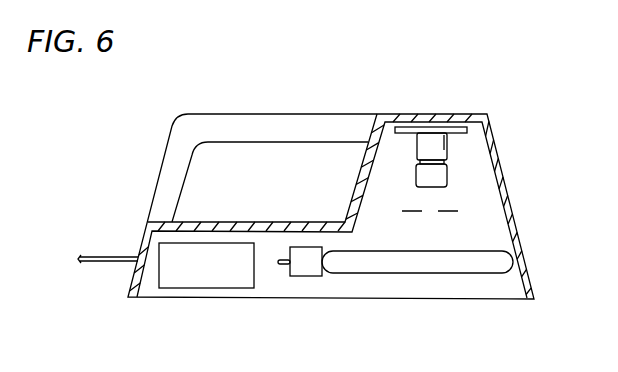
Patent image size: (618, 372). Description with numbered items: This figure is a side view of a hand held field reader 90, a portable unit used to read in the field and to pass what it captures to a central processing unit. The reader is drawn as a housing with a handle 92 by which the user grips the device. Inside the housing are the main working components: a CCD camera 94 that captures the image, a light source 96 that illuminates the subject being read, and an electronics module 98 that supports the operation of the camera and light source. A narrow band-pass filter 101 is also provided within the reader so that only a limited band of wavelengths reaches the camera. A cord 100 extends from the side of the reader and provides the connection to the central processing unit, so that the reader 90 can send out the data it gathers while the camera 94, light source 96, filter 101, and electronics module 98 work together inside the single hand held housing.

The hand held reader 90 is at (362, 97).
The handle 92 is at (204, 128).
The CCD camera 94 is at (450, 150).
The light source 96 is at (478, 273).
The electronics module 98 is at (219, 277).
The cord 100 is at (96, 250).
The narrow band-pass filter 101 is at (450, 211).